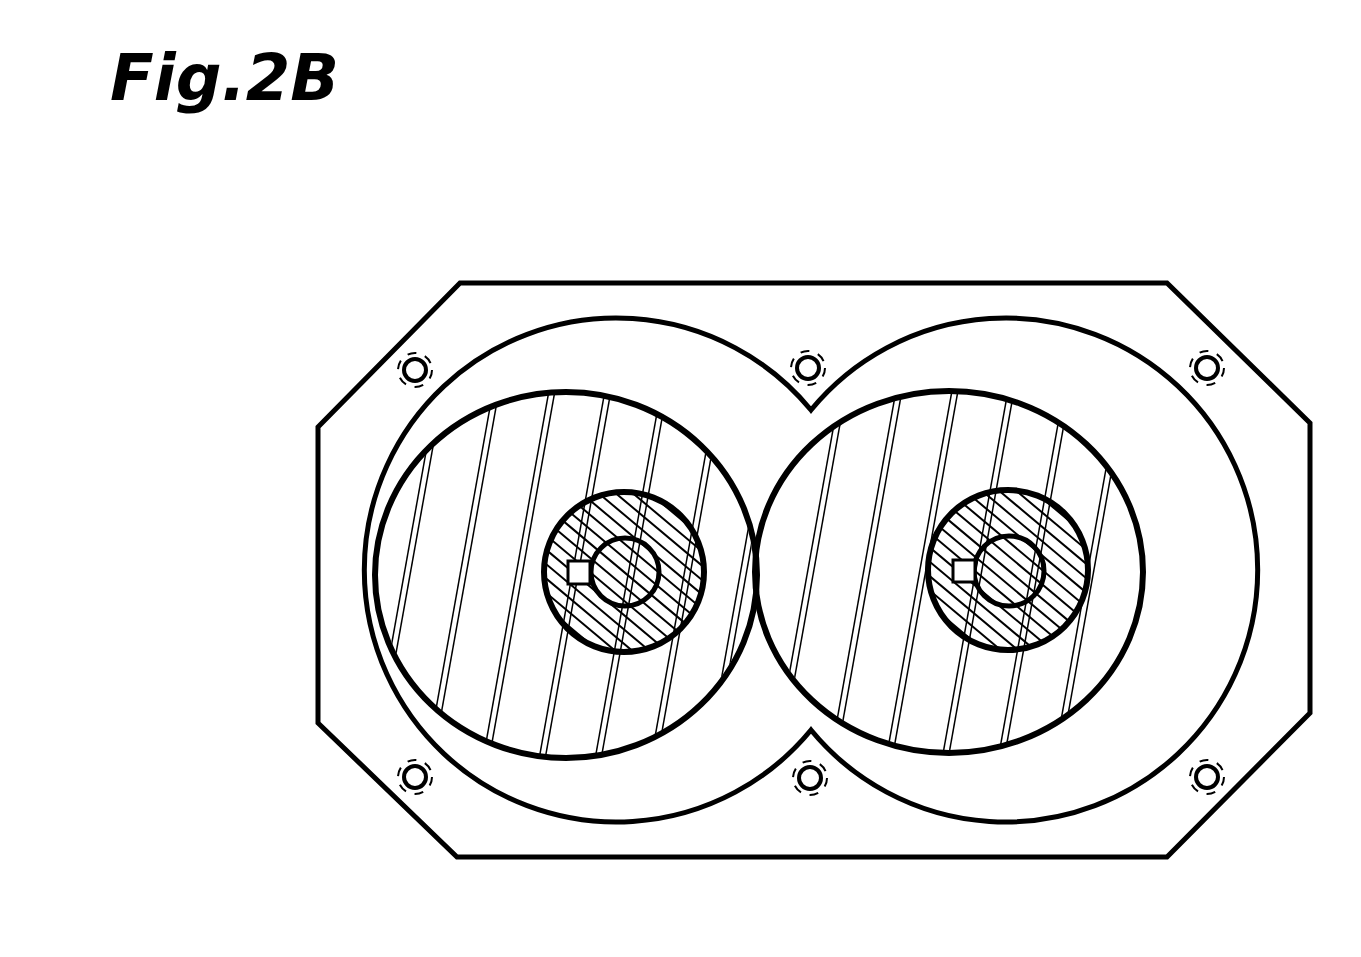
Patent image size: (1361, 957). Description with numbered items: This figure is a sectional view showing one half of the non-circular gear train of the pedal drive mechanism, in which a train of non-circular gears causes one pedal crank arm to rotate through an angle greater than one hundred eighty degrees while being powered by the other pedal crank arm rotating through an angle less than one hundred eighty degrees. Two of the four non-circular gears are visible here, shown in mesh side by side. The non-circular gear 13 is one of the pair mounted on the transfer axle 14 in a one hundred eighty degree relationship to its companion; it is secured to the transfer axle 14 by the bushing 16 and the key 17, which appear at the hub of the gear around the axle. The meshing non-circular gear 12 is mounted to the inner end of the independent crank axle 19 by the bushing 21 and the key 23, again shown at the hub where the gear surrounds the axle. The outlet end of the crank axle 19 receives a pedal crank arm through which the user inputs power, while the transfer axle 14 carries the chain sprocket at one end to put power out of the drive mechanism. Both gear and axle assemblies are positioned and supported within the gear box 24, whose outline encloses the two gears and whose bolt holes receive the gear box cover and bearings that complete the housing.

The non-circular gear 12 is at (1027, 453).
The non-circular gear 13 is at (672, 480).
The transfer axle 14 is at (612, 557).
The bushing 16 is at (588, 562).
The key 17 is at (572, 566).
The independent crank axle 19 is at (1003, 563).
The bushing 21 is at (1040, 530).
The key 23 is at (962, 560).
The gear box 24 is at (1223, 393).